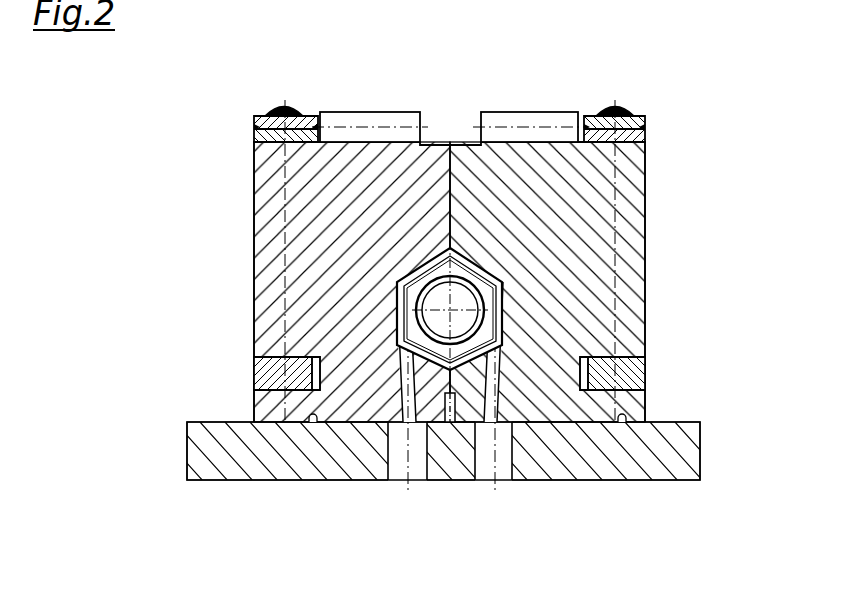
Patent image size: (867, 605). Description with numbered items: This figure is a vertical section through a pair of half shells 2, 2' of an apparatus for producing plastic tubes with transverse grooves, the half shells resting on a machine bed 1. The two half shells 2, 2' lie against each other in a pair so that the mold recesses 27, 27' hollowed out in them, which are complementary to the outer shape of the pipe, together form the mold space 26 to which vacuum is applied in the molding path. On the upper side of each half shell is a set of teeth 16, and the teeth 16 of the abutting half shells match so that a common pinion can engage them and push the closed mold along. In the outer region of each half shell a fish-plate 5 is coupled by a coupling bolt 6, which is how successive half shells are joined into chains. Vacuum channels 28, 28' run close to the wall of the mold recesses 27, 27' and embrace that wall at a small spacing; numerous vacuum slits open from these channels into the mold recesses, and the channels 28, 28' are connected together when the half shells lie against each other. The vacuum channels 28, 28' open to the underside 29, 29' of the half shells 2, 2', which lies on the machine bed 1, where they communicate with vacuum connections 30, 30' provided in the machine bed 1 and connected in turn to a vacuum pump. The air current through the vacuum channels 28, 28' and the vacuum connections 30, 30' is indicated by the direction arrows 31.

The machine bed 1 is at (680, 450).
The half shell 2 is at (597, 282).
The half shell 2' is at (307, 282).
The fish-plate 5 is at (254, 116).
The coupling bolt 6 is at (284, 105).
The set of teeth 16 is at (367, 128).
The mold space 26 is at (432, 327).
The mold recess 27 is at (578, 301).
The mold recess 27' is at (328, 306).
The vacuum channel 28 is at (625, 342).
The vacuum channel 28' is at (276, 339).
The underside 29 is at (655, 481).
The underside 29' is at (276, 480).
The vacuum connection 30 is at (537, 415).
The vacuum connection 30' is at (372, 414).
The direction arrows 31 is at (495, 522).